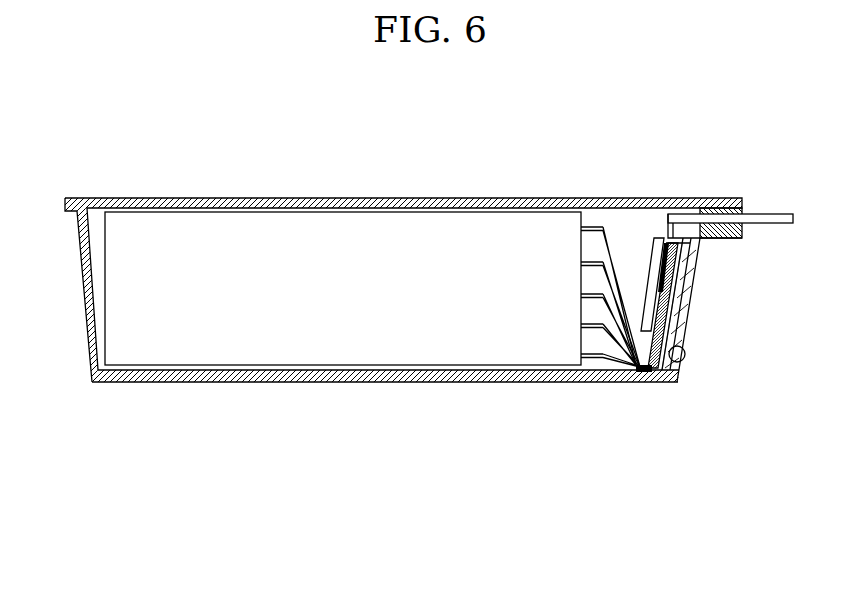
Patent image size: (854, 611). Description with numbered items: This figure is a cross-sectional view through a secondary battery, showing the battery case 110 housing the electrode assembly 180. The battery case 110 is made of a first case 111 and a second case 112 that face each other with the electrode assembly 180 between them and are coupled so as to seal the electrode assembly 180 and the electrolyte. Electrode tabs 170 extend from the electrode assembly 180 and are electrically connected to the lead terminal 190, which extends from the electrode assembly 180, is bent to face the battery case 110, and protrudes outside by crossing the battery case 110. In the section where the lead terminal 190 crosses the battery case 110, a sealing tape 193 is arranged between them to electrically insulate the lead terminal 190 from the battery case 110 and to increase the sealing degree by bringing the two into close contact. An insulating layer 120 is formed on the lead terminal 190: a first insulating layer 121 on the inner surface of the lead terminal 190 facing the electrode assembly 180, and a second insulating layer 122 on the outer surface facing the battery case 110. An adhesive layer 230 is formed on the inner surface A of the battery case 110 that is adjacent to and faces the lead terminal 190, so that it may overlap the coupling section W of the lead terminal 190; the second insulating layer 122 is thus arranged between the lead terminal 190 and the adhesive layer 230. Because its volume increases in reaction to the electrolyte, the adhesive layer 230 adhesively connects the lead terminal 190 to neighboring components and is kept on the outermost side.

The battery case 110 is at (382, 300).
The first case 111 is at (390, 198).
The second case 112 is at (413, 382).
The insulating layer 120 is at (730, 260).
The first insulating layer 121 is at (657, 238).
The second insulating layer 122 is at (735, 310).
The electrode tabs 170 is at (592, 222).
The electrode assembly 180 is at (300, 330).
The lead terminal 190 is at (778, 214).
The sealing tape 193 is at (720, 207).
The adhesive layer 230 is at (683, 326).
The coupling section W is at (680, 267).
The inner surface A is at (687, 365).